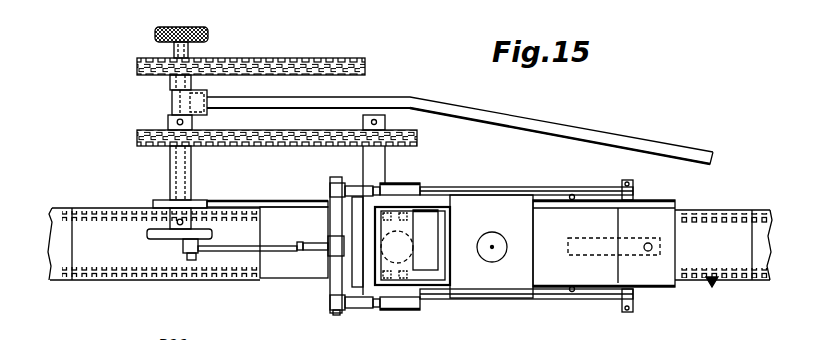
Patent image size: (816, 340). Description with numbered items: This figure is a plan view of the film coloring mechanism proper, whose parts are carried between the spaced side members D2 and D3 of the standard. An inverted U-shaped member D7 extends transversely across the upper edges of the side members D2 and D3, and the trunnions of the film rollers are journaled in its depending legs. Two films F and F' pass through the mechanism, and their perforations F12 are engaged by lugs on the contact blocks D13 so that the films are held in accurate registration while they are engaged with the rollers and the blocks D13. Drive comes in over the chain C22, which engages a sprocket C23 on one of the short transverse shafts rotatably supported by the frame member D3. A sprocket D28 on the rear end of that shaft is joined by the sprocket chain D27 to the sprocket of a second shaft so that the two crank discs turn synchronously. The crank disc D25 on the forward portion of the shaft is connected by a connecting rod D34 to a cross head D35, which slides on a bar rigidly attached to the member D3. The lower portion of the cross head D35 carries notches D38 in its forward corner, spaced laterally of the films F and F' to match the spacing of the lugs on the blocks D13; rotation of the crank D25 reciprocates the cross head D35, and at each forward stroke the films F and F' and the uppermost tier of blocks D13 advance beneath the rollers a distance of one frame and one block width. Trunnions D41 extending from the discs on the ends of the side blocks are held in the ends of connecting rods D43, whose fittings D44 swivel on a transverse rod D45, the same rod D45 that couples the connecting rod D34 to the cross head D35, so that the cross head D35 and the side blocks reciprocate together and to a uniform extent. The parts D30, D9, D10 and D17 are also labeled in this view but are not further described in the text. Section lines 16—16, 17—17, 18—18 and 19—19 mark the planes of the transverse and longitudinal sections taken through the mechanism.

The chain C22 is at (262, 42).
The sprocket C23 is at (153, 76).
The sprocket chain D27 is at (277, 128).
The sprocket D28 is at (158, 147).
The crank disc D25 is at (163, 233).
The side member D3 is at (237, 203).
The connecting rod D34 is at (280, 245).
The cross head D35 is at (353, 212).
The fittings D44 is at (335, 190).
The transverse rod D45 is at (337, 283).
The support plate D30 is at (387, 307).
The contact blocks D13 is at (433, 227).
The notches D38 is at (397, 247).
The inverted U-shaped member D7 is at (491, 246).
The circular member D9 is at (494, 244).
The pin D10 is at (493, 257).
The connecting rods D43 is at (585, 184).
The trunnions D41 is at (627, 182).
The hidden member D17 is at (614, 238).
The side member D2 is at (652, 287).
The film F is at (410, 235).
The film F' is at (745, 200).
The perforations F12 is at (712, 287).
The section line 16— 16 is at (43, 245).
The section line 17— 17 is at (487, 150).
The section line 18— 18 is at (402, 150).
The section line 19— 19 is at (426, 272).